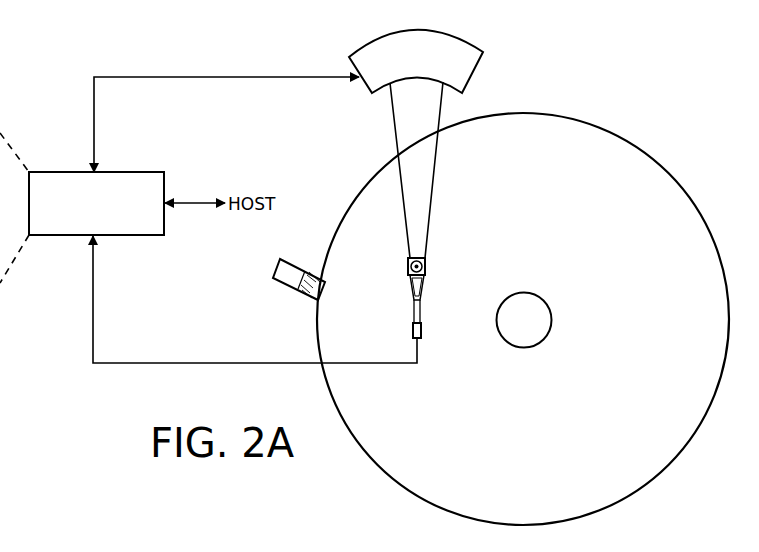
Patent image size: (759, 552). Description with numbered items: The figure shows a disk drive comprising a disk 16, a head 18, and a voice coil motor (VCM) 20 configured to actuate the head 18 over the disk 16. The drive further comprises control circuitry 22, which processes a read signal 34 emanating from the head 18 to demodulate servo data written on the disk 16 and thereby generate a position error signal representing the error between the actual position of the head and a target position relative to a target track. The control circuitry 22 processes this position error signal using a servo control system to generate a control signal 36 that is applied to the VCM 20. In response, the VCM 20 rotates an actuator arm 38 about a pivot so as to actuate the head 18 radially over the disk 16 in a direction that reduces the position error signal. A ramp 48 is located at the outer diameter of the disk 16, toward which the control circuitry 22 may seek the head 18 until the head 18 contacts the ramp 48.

The disk 16 is at (661, 162).
The head 18 is at (410, 330).
The voice coil motor (VCM) 20 is at (368, 87).
The control circuitry 22 is at (133, 172).
The read signal 34 is at (190, 362).
The control signal 36 is at (94, 128).
The actuator arm 38 is at (398, 137).
The ramp 48 is at (299, 266).